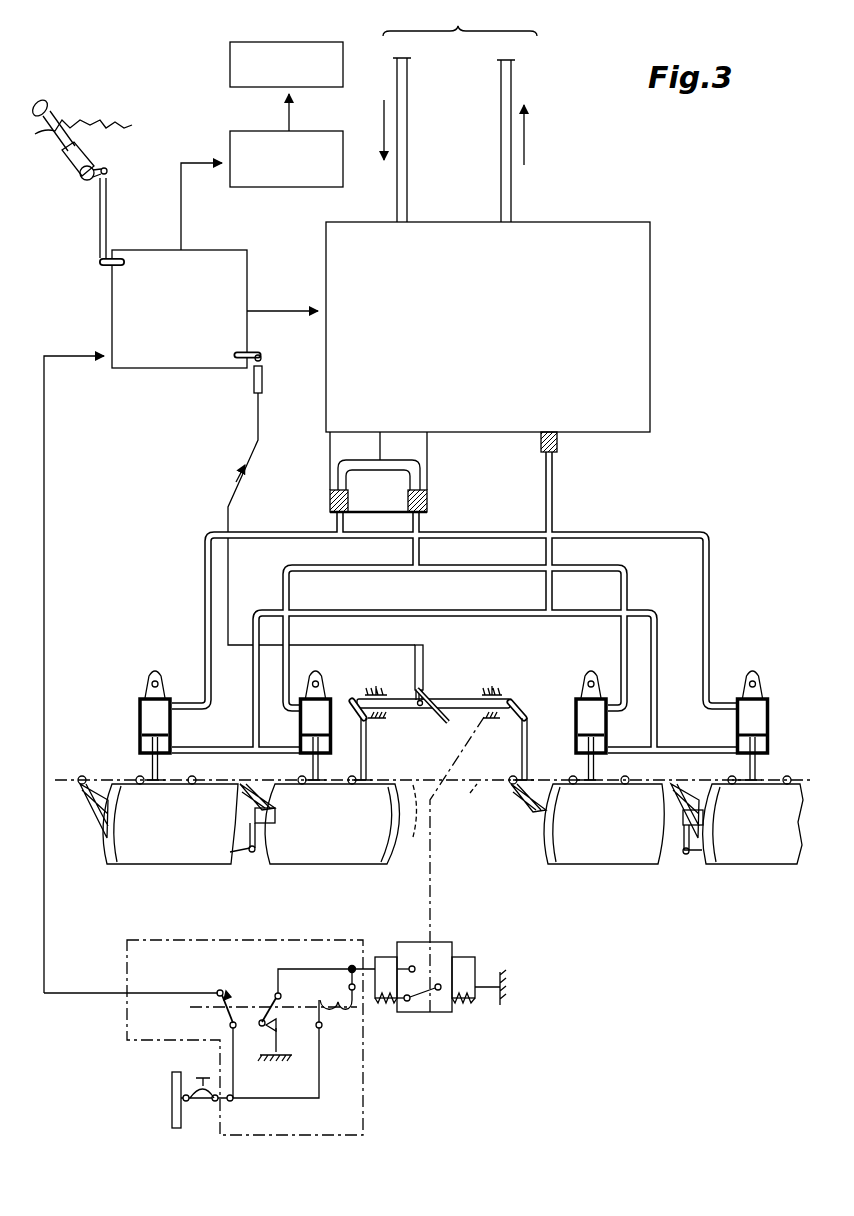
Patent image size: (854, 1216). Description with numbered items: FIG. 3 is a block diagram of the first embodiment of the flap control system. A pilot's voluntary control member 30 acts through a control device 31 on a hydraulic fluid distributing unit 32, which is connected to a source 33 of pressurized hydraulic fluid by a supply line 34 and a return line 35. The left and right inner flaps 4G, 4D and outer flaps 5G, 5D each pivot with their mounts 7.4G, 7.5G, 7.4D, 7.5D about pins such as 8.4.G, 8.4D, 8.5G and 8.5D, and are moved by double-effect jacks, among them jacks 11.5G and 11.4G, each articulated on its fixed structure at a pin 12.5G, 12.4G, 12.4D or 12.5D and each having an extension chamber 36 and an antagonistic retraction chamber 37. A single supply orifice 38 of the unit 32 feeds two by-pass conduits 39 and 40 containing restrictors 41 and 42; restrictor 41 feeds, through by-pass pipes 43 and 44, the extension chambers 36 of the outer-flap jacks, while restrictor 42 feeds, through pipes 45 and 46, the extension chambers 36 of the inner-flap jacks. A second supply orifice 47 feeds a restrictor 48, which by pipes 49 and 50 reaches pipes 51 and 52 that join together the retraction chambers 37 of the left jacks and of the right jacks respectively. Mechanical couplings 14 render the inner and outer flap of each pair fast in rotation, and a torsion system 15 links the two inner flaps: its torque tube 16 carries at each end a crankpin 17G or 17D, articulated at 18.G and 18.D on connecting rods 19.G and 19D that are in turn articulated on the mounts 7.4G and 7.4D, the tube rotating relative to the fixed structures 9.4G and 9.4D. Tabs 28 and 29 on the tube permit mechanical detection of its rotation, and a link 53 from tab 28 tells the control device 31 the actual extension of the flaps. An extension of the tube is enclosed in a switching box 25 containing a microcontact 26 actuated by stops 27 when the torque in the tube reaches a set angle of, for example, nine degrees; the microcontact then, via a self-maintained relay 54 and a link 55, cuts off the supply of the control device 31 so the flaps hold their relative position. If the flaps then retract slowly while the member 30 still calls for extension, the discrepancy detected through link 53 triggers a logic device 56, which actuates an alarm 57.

The voluntary control member 30 is at (68, 112).
The control device 31 is at (125, 309).
The hydraulic fluid distributing unit 32 is at (598, 240).
The source of hydraulic fluid under pressure 33 is at (460, 19).
The supply line 34 is at (412, 162).
The return line 35 is at (512, 86).
The extension chamber 36 is at (160, 700).
The retraction chamber 37 is at (162, 738).
The supply orifice 38 is at (384, 443).
The by-pass conduit 39 is at (337, 470).
The by-pass conduit 40 is at (412, 478).
The restrictor 41 is at (329, 501).
The restrictor 42 is at (428, 504).
The by-pass pipe 43 is at (252, 533).
The by-pass pipe 44 is at (655, 533).
The by-pass pipe 45 is at (367, 572).
The by-pass pipe 46 is at (472, 570).
The supply orifice 47 is at (556, 430).
The restrictor 48 is at (560, 450).
The by-pass pipe 49 is at (468, 612).
The by-pass pipe 50 is at (610, 612).
The connecting pipe 51 is at (205, 748).
The connecting pipe 52 is at (672, 748).
The link 53 is at (236, 487).
The relay 54 is at (355, 1122).
The link 55 is at (46, 632).
The logic device 56 is at (263, 115).
The alarm 57 is at (292, 55).
The switching box 25 is at (445, 1014).
The microcontact 26 is at (420, 1008).
The stops 27 is at (436, 920).
The tab 28 is at (418, 660).
The tab 29 is at (446, 722).
The torsion system 15 is at (437, 694).
The torque tube 16 is at (417, 700).
The mechanical coupling 14 is at (258, 854).
The articulation pin 12.5G is at (152, 680).
The articulation pin 12.4G is at (326, 672).
The articulation pin 12.4D is at (592, 680).
The articulation pin 12.5D is at (760, 666).
The double-effect jack 11.5G is at (138, 724).
The double-effect jack 11.4G is at (305, 740).
The pivot pin 8.5G is at (84, 776).
The pivot pin 8.5D is at (795, 774).
The pivot pin 8.4.G is at (422, 823).
The pivot pin 8.4D is at (474, 793).
The pivoting mount 7.5G is at (104, 826).
The pivoting mount 7.4G is at (272, 770).
The pivoting mount 7.4D is at (534, 820).
The pivoting mount 7.5D is at (690, 794).
The left outer high-lift flap 5G is at (186, 856).
The left inner high-lift flap 4G is at (328, 856).
The right inner high-lift flap 4D is at (604, 866).
The right outer high-lift flap 5D is at (760, 866).
The fixed descending structure 9.4G is at (380, 678).
The fixed descending structure 9.4D is at (493, 686).
The crankpin 17G is at (356, 718).
The crankpin 17D is at (518, 720).
The articulation 18.G is at (376, 722).
The articulation 18.D is at (526, 696).
The connecting rod 19.G is at (368, 752).
The connecting rod 19D is at (520, 765).